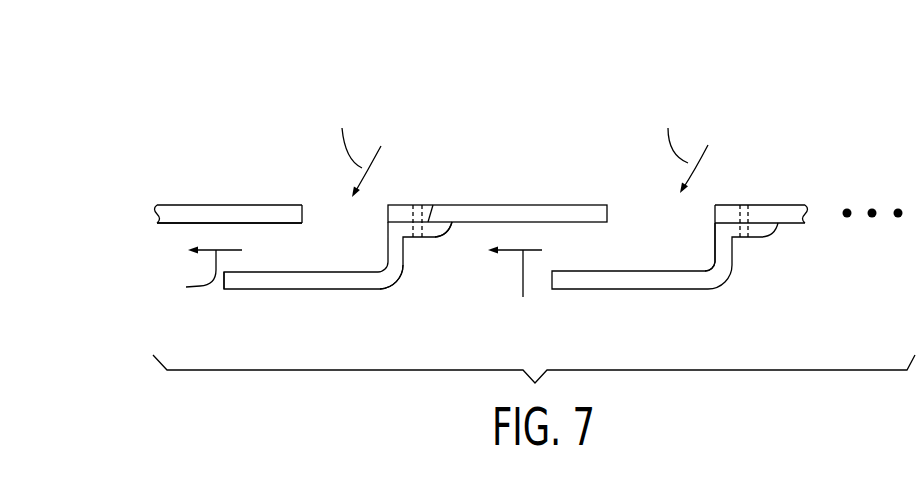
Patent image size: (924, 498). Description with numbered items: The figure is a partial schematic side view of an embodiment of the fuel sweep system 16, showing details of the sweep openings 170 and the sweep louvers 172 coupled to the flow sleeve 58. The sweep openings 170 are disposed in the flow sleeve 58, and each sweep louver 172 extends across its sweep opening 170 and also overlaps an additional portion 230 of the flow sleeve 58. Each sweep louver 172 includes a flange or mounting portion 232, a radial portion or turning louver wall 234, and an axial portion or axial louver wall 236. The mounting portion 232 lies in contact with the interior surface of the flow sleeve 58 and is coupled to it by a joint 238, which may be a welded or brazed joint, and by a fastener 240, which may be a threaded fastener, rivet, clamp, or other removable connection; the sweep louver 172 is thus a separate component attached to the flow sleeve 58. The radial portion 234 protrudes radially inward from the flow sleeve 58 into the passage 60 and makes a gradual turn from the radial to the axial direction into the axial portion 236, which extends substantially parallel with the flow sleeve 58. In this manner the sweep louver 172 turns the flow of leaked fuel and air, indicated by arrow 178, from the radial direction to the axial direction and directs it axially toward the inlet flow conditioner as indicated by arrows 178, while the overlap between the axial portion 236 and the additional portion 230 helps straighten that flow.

The fuel sweep system 16 is at (780, 279).
The flow sleeve 58 is at (173, 224).
The passage 60 is at (478, 330).
The sweep opening 170 is at (375, 193).
The sweep louver 172 is at (326, 289).
The arrow 178 is at (426, 212).
The additional portion 230 is at (220, 205).
The mounting portion 232 is at (434, 205).
The radial portion 234 is at (398, 284).
The axial portion 236 is at (257, 289).
The joint 238 is at (444, 231).
The fastener 240 is at (413, 205).